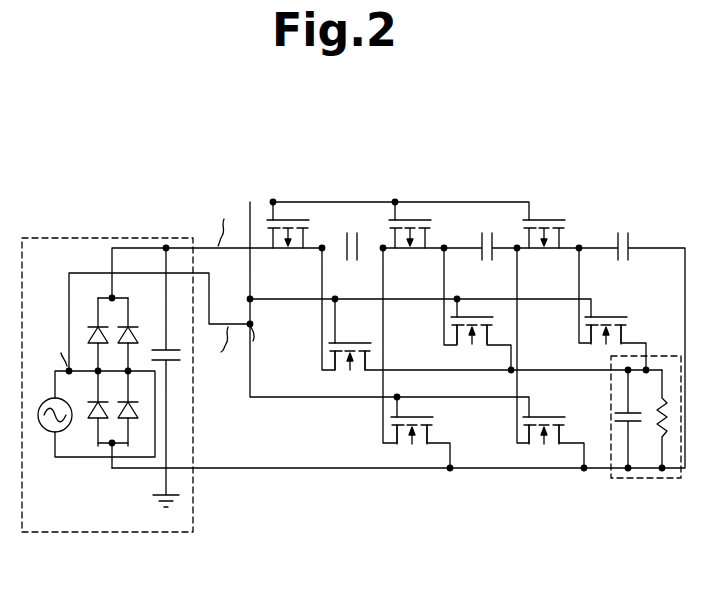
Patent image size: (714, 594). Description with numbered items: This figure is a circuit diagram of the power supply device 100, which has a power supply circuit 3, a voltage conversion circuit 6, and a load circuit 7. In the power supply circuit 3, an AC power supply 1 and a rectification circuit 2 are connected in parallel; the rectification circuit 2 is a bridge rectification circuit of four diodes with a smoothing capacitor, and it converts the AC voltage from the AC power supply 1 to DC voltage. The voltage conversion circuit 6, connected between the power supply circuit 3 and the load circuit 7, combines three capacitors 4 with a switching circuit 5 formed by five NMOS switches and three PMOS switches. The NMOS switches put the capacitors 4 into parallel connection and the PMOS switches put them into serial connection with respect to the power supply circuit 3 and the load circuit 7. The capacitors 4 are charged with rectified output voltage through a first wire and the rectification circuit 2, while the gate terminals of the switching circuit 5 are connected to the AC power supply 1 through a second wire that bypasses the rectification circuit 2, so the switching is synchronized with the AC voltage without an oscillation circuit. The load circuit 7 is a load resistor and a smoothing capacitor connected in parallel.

The power supply device 100 is at (640, 122).
The AC power supply 1 is at (43, 432).
The rectification circuit 2 is at (192, 232).
The power supply circuit 3 is at (112, 533).
The capacitors 4 is at (440, 158).
The switching circuit 5 is at (469, 158).
The voltage conversion circuit 6 is at (635, 187).
The load circuit 7 is at (646, 480).